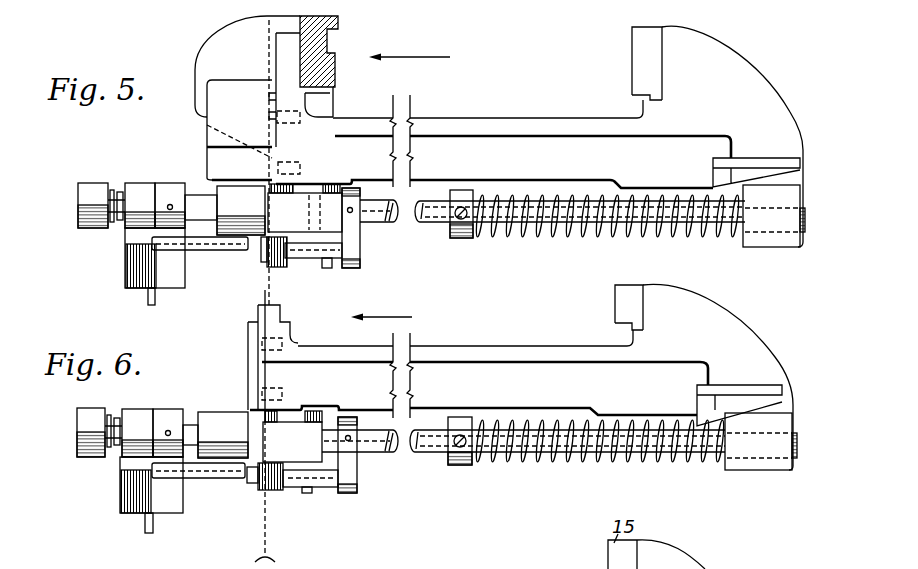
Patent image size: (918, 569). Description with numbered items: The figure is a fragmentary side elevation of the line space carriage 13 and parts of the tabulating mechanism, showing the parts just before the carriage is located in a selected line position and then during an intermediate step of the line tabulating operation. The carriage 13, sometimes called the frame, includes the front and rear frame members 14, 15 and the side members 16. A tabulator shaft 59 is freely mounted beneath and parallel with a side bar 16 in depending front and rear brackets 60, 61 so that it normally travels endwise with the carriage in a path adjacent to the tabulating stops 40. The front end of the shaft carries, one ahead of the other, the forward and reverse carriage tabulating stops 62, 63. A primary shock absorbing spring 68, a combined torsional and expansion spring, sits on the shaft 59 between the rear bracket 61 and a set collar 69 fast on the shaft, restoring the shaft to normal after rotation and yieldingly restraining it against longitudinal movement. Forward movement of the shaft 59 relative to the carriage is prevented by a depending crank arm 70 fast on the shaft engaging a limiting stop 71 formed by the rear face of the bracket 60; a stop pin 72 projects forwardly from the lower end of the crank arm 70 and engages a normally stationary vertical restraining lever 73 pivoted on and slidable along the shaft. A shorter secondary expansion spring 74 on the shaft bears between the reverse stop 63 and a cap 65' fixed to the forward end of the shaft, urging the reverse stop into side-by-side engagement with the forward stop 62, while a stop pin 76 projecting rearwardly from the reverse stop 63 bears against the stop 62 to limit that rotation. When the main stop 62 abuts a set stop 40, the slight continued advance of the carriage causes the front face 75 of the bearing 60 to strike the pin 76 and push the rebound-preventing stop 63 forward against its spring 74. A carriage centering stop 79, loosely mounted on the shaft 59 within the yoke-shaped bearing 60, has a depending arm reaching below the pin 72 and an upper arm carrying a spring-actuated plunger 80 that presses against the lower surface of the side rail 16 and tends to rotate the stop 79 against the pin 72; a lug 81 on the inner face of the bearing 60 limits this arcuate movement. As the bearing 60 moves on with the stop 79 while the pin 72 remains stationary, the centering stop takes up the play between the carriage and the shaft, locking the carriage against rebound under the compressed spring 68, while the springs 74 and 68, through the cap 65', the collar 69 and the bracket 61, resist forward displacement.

In FIG. 5, the line space carriage 13 is at (632, 50).
In FIG. 6, the line space carriage 13 is at (615, 310).
In FIG. 5, the front frame member 14 is at (334, 66).
In FIG. 5, the rear frame member 15 is at (632, 32).
In FIG. 6, the rear frame member 15 is at (615, 289).
In FIG. 5, the side member 16 is at (513, 123).
In FIG. 6, the side member 16 is at (519, 354).
In FIG. 5, the tabulating stop 40 is at (142, 314).
In FIG. 6, the tabulating stop 40 is at (144, 534).
In FIG. 5, the tabulator shaft 59 is at (444, 221).
In FIG. 6, the tabulator shaft 59 is at (437, 453).
In FIG. 5, the front bracket 60 is at (305, 208).
In FIG. 6, the front bracket 60 is at (292, 436).
In FIG. 5, the rear bracket 61 is at (774, 215).
In FIG. 6, the rear bracket 61 is at (761, 441).
In FIG. 5, the forward carriage tabulating stop 62 is at (173, 185).
In FIG. 6, the forward carriage tabulating stop 62 is at (176, 416).
In FIG. 5, the reverse carriage tabulating stop 63 is at (140, 185).
In FIG. 6, the reverse carriage tabulating stop 63 is at (139, 416).
In FIG. 5, the cap 65' is at (80, 224).
In FIG. 6, the cap 65' is at (81, 452).
In FIG. 5, the combined torsional and expansion spring 68 is at (532, 234).
In FIG. 6, the combined torsional and expansion spring 68 is at (558, 463).
In FIG. 5, the set collar 69 is at (463, 238).
In FIG. 6, the set collar 69 is at (462, 466).
In FIG. 5, the crank arm 70 is at (360, 260).
In FIG. 6, the crank arm 70 is at (358, 489).
In FIG. 5, the limiting stop 71 is at (338, 228).
In FIG. 6, the limiting stop 71 is at (318, 451).
In FIG. 5, the stop pin 72 is at (313, 259).
In FIG. 6, the stop pin 72 is at (323, 489).
In FIG. 5, the restraining lever 73 is at (330, 268).
In FIG. 6, the restraining lever 73 is at (311, 494).
In FIG. 5, the expansion spring 74 is at (113, 190).
In FIG. 6, the expansion spring 74 is at (113, 414).
In FIG. 5, the front face 75 is at (262, 262).
In FIG. 6, the front face 75 is at (250, 484).
In FIG. 5, the stop pin 76 is at (222, 251).
In FIG. 6, the stop pin 76 is at (213, 480).
In FIG. 5, the carriage centering stop 79 is at (288, 267).
In FIG. 6, the carriage centering stop 79 is at (276, 491).
In FIG. 5, the spring-actuated plunger 80 is at (300, 185).
In FIG. 6, the spring-actuated plunger 80 is at (291, 416).
In FIG. 5, the lug 81 is at (241, 210).
In FIG. 6, the lug 81 is at (223, 435).